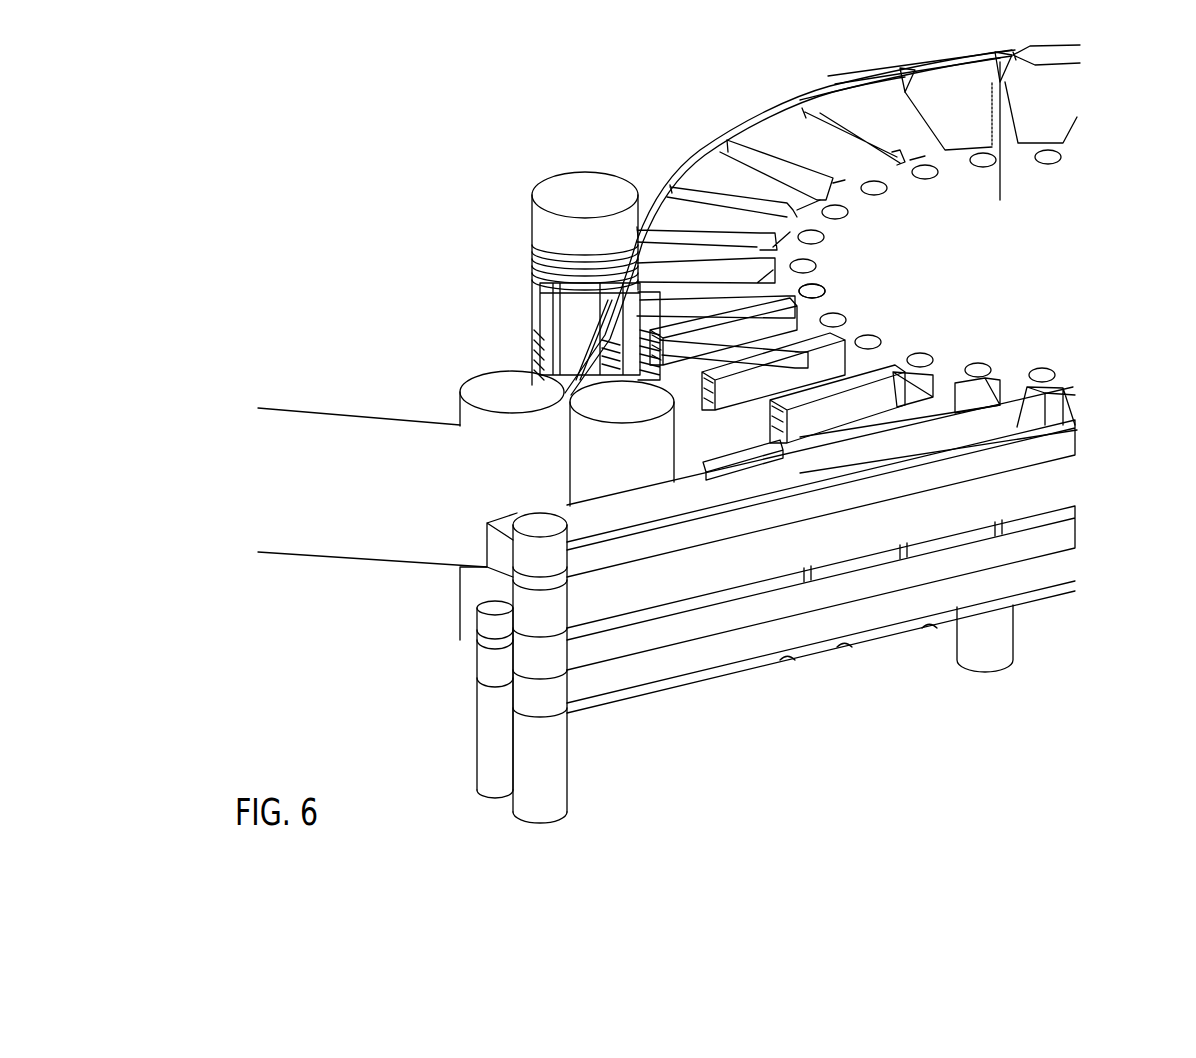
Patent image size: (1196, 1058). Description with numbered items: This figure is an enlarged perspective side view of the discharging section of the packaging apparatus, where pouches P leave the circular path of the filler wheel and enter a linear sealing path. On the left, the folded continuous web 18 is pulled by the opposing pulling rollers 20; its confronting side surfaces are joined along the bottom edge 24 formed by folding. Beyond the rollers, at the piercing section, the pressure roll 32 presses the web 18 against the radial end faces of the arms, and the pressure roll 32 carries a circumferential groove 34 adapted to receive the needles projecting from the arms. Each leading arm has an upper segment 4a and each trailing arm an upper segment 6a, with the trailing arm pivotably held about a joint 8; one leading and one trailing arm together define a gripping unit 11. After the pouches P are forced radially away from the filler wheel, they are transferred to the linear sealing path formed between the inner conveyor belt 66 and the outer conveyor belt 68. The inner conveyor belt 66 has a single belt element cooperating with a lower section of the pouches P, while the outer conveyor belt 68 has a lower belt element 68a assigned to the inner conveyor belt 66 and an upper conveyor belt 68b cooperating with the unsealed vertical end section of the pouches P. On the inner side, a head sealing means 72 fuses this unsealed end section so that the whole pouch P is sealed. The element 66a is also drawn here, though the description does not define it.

The continuous web 18 is at (370, 416).
The pulling rollers 20 is at (501, 404).
The bottom edge 24 is at (343, 557).
The pressure roll 32 is at (573, 205).
The circumferential groove 34 is at (521, 267).
The upper segment 6a is at (843, 312).
The joint 8 is at (800, 340).
The upper segment 4a is at (820, 349).
The gripping unit 11 is at (840, 360).
The head sealing means 72 is at (783, 487).
The inner conveyor belt 66 is at (462, 660).
The post ring 66a is at (487, 668).
The lower belt element 68a is at (520, 694).
The outer conveyor belt 68 is at (640, 708).
The upper conveyor belt 68b is at (690, 577).
The pouches P is at (925, 640).